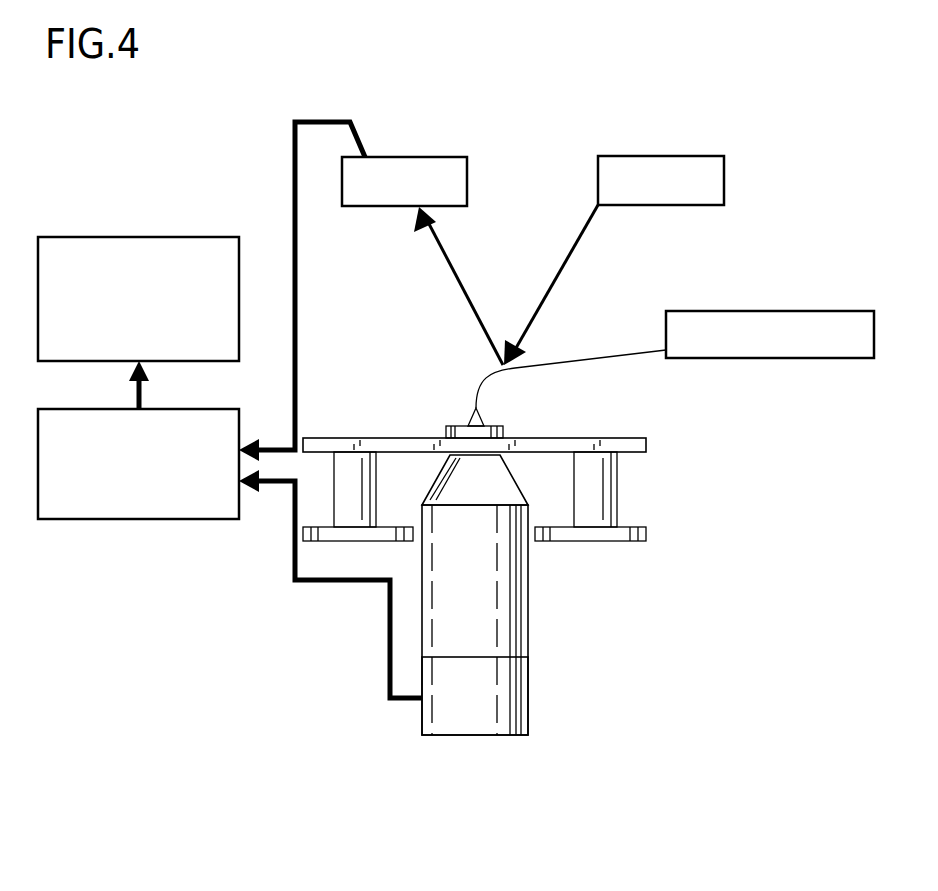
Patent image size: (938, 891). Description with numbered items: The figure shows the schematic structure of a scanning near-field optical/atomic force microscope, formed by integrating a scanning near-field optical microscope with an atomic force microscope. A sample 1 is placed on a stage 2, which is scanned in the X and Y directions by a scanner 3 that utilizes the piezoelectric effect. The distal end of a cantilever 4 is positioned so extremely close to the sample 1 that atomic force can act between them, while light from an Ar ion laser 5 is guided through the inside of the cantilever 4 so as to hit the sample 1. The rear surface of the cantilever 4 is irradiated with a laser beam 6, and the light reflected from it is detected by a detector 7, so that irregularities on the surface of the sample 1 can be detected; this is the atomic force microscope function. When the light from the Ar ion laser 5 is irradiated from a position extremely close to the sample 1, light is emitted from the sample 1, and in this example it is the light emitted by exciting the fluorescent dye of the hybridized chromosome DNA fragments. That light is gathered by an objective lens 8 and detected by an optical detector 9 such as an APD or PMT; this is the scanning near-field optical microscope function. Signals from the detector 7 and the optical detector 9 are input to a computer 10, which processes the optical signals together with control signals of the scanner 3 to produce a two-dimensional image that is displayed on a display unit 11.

The sample 1 is at (498, 425).
The stage 2 is at (638, 432).
The scanner 3 is at (620, 493).
The cantilever 4 is at (555, 357).
The Ar ion laser 5 is at (762, 310).
The laser beam 6 is at (658, 157).
The detector 7 is at (443, 157).
The objective lens 8 is at (530, 612).
The optical detector 9 is at (530, 700).
The computer 10 is at (152, 520).
The display unit 11 is at (133, 236).